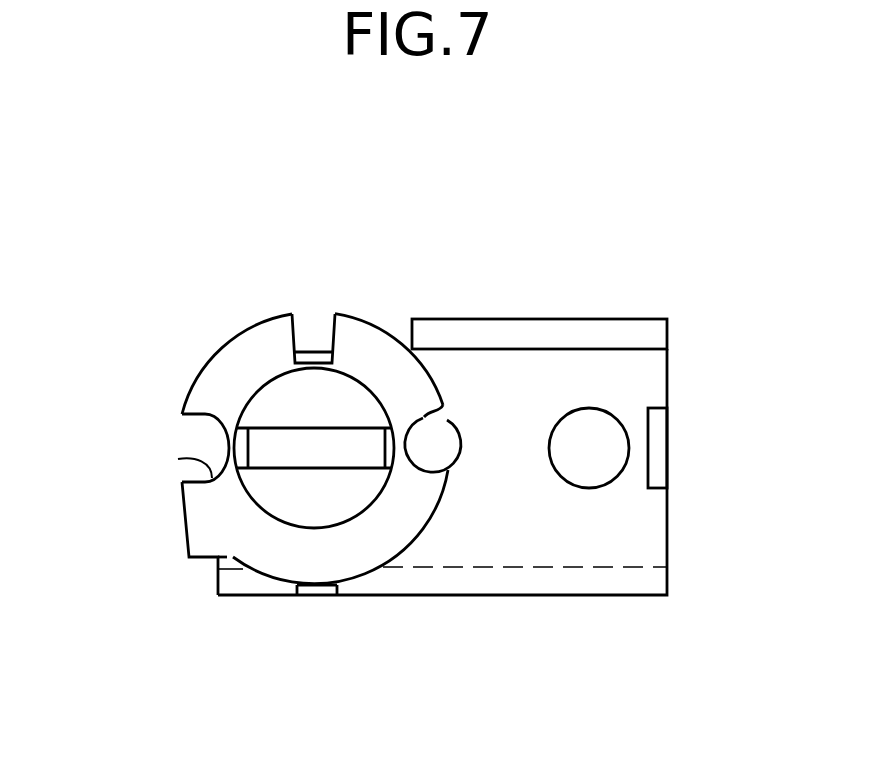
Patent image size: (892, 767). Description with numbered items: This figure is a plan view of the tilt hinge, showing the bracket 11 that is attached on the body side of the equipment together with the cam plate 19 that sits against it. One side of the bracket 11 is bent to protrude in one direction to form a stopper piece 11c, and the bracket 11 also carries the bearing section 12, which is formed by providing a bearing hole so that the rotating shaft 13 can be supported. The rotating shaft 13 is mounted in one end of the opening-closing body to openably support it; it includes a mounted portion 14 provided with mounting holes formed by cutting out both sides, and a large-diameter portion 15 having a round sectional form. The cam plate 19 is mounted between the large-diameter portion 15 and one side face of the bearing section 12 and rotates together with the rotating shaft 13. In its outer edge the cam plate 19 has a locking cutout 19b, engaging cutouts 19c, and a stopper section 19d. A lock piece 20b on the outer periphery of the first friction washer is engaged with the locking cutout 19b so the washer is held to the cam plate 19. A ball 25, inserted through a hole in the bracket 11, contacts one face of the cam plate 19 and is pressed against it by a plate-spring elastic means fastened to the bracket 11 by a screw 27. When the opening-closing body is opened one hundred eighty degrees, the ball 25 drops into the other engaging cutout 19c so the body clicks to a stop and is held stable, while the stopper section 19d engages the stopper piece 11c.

The bracket 11 is at (503, 419).
The stopper piece 11c is at (592, 325).
The bearing section 12 is at (198, 443).
The rotating shaft 13 is at (318, 413).
The mounted portion 14 is at (307, 453).
The large-diameter portion 15 is at (262, 414).
The cam plate 19 is at (317, 432).
The locking cutout 19b is at (368, 279).
The engaging cutout 19c is at (178, 459).
The stopper section 19d is at (198, 523).
The lock piece 20b is at (303, 337).
The ball 25 is at (458, 452).
The screw 27 is at (607, 457).